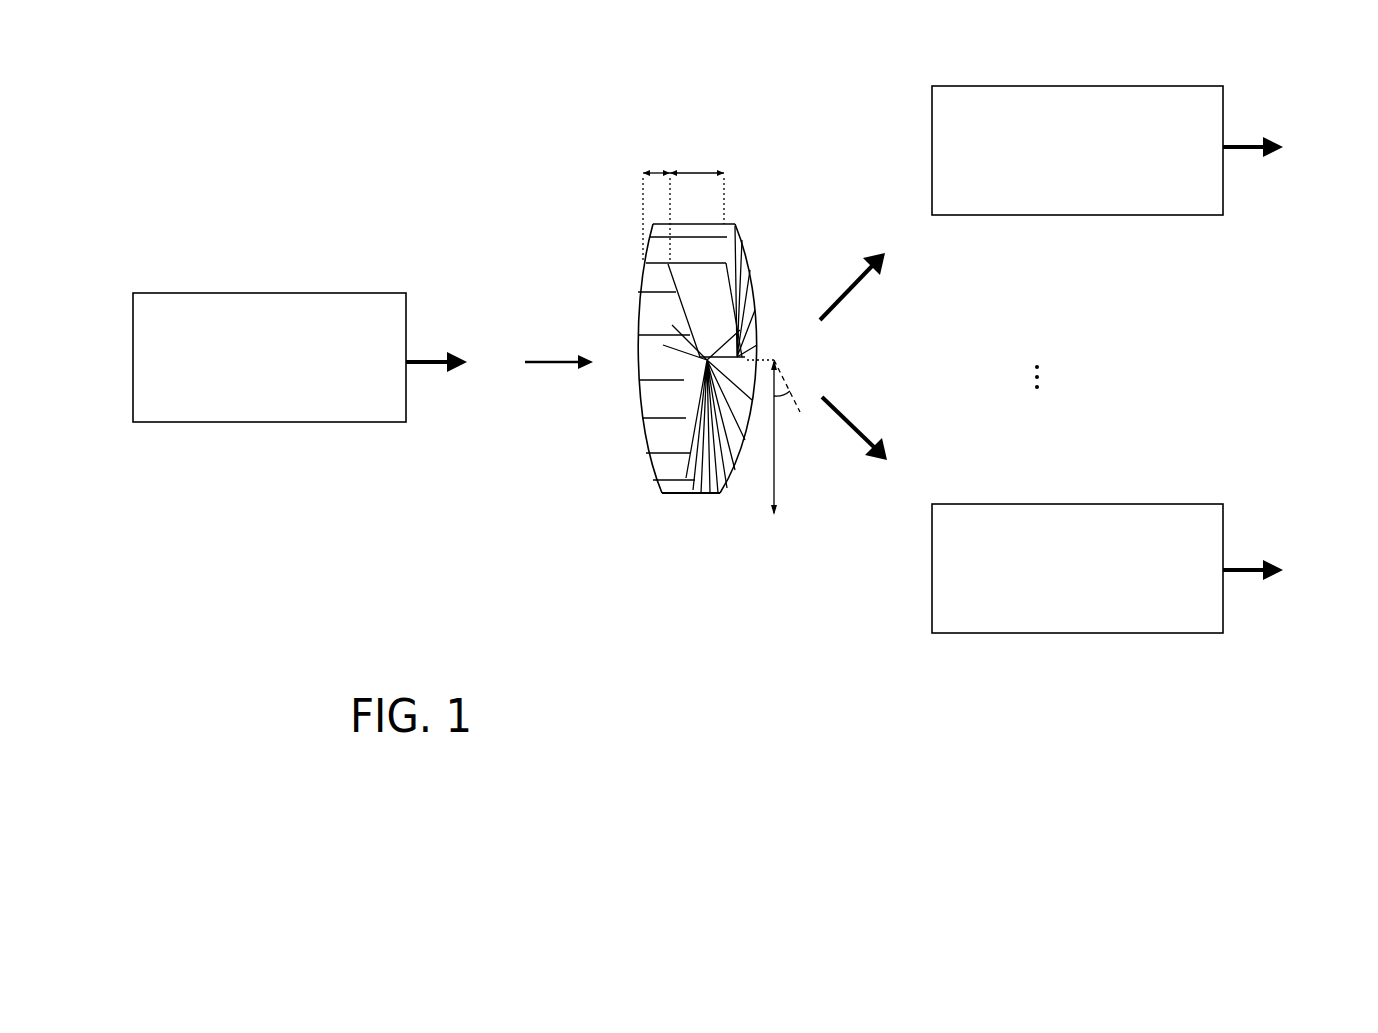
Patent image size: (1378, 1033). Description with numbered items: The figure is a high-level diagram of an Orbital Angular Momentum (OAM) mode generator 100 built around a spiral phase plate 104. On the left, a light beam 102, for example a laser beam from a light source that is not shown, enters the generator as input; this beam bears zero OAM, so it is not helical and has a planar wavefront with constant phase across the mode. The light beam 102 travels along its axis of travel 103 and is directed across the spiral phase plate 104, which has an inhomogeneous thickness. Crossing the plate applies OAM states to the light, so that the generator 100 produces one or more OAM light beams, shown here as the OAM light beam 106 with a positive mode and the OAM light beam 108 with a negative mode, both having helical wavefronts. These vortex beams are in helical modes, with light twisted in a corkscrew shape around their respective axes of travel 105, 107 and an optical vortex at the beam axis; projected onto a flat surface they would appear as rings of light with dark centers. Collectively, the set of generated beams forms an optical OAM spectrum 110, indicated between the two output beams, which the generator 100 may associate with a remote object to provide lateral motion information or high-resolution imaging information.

The Orbital Angular Momentum (OAM) mode generator 100 is at (690, 52).
The light beam 102 is at (248, 402).
The axis of travel 103 is at (419, 378).
The spiral phase plate 104 is at (684, 507).
The axis of travel 105 is at (1240, 126).
The OAM light beam 106 is at (1100, 197).
The axis of travel 107 is at (1240, 590).
The OAM light beam 108 is at (1100, 614).
The optical OAM spectrum 110 is at (1009, 262).